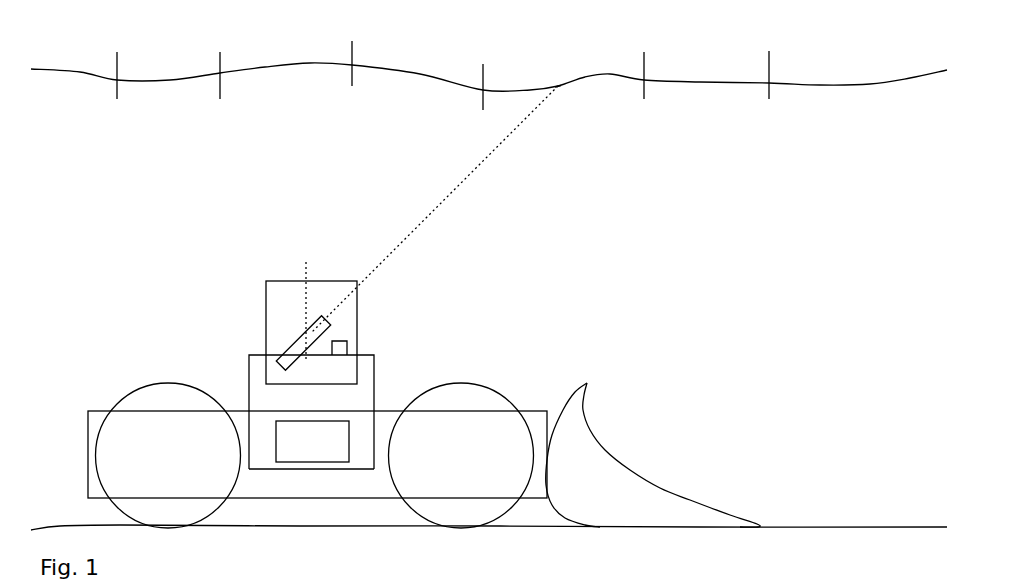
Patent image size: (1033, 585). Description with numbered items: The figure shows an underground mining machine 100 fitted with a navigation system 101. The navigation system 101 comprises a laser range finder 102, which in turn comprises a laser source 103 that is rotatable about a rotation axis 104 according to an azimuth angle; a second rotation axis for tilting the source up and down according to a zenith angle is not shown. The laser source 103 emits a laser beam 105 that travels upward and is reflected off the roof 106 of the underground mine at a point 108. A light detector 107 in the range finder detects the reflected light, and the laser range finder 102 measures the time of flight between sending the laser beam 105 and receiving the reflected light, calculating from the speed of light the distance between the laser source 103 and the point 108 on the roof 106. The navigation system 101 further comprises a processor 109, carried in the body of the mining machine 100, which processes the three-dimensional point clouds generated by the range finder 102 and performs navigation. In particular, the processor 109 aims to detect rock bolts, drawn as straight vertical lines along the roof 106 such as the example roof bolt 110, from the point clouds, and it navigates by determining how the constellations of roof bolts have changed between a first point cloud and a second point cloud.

The underground mining machine 100 is at (195, 262).
The navigation system 101 is at (240, 368).
The laser range finder 102 is at (279, 272).
The laser source 103 is at (292, 340).
The rotation axis 104 is at (307, 265).
The laser beam 105 is at (440, 202).
The roof 106 is at (400, 72).
The light detector 107 is at (345, 343).
The point 108 is at (558, 86).
The processor 109 is at (312, 441).
The roof bolt 110 is at (768, 60).